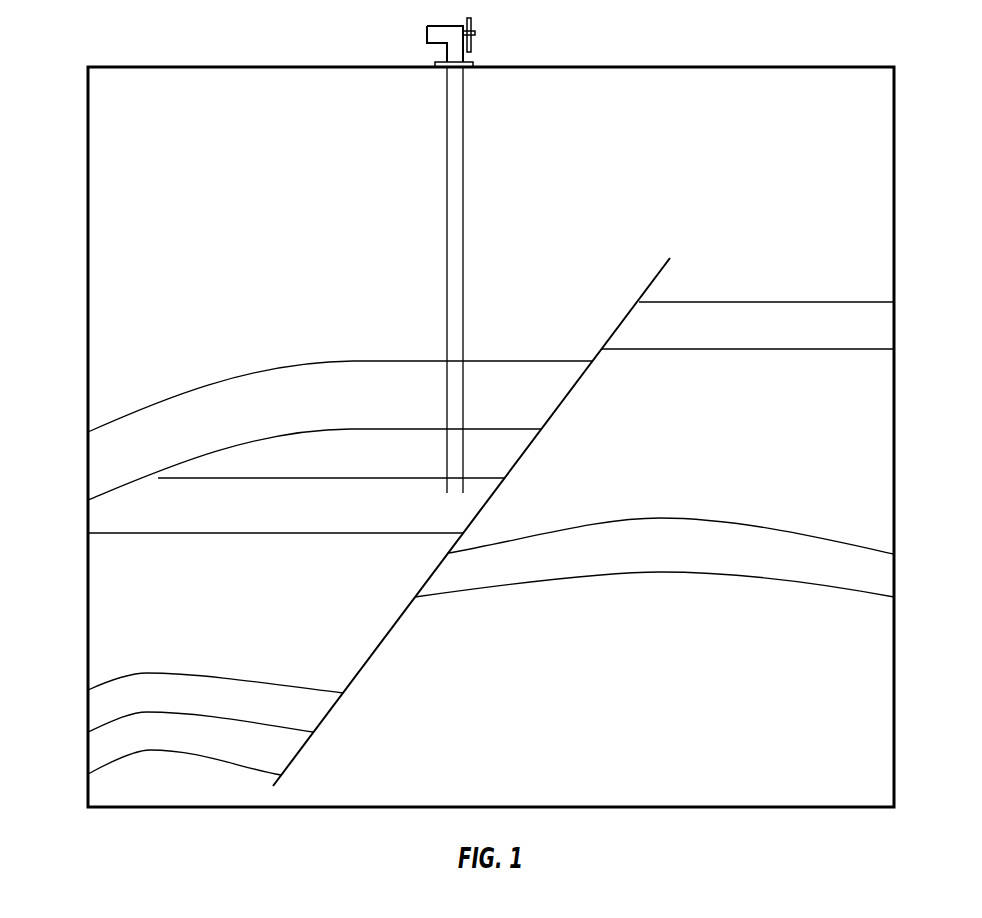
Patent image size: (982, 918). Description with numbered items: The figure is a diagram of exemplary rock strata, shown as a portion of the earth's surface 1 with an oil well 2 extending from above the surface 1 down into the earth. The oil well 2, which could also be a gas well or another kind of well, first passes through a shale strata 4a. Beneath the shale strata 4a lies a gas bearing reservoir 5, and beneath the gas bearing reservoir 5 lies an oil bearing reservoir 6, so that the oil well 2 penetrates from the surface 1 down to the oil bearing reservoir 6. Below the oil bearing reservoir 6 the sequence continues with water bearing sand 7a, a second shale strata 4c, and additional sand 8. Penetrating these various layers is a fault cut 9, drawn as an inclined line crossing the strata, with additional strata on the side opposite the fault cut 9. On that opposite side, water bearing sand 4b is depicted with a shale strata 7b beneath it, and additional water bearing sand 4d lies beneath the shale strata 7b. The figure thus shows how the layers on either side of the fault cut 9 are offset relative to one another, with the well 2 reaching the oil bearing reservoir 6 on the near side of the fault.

The earth's surface 1 is at (138, 66).
The oil well 2 is at (447, 198).
The shale strata 4a is at (100, 458).
The water bearing sand 4b is at (880, 320).
The second shale strata 4c is at (100, 705).
The additional water bearing sand 4d is at (880, 577).
The gas bearing reservoir 5 is at (500, 452).
The oil bearing reservoir 6 is at (100, 518).
The water bearing sand 7a is at (100, 625).
The shale strata 7b is at (880, 433).
The additional sand 8 is at (100, 752).
The fault cut 9 is at (652, 276).